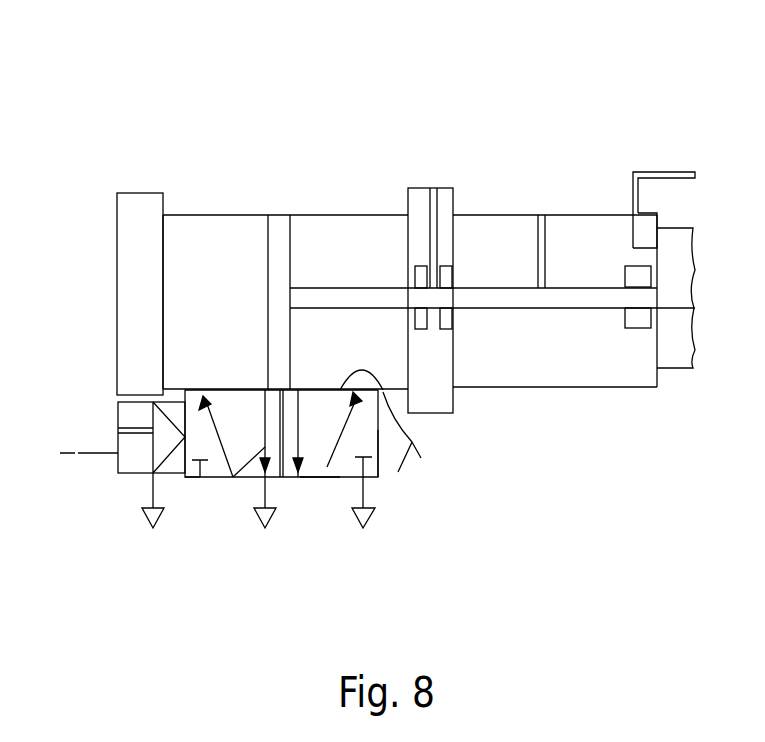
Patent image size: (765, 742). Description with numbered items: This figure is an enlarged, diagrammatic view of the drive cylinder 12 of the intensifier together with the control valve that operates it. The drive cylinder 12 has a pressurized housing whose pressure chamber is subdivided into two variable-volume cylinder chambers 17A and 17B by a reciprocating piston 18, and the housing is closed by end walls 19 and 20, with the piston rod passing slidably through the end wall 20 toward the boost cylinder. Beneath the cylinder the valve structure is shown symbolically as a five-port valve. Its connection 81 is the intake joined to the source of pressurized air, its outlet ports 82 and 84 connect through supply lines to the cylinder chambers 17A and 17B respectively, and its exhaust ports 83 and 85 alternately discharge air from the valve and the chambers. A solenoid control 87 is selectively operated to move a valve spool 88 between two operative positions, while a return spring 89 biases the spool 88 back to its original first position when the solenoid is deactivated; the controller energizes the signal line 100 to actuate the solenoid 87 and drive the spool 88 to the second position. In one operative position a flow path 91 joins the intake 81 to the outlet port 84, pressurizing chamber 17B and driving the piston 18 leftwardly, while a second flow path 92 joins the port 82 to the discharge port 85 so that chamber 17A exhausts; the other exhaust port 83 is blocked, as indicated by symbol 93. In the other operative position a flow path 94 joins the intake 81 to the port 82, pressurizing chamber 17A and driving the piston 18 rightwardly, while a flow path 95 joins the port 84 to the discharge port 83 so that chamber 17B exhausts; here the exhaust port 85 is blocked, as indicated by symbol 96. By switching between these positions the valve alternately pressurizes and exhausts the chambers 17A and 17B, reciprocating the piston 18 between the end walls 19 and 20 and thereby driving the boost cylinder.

The drive cylinder 12 is at (237, 130).
The cylinder chamber 17A is at (183, 230).
The cylinder chamber 17B is at (343, 227).
The reciprocating piston 18 is at (292, 215).
The end wall 19 is at (125, 245).
The end wall 20 is at (455, 402).
The outlet port 82 is at (233, 388).
The outlet port 84 is at (383, 392).
The return spring 89 is at (402, 472).
The solenoid control 87 is at (142, 473).
The signal line 100 is at (87, 456).
The valve spool 88 is at (186, 478).
The symbol 96 is at (195, 492).
The flow path 94 is at (226, 477).
The flow path 95 is at (234, 477).
The exhaust port 85 is at (268, 517).
The flow path 92 is at (298, 478).
The flow path 91 is at (327, 467).
The connection 81 is at (328, 478).
The exhaust port 83 is at (373, 515).
The symbol 93 is at (379, 432).